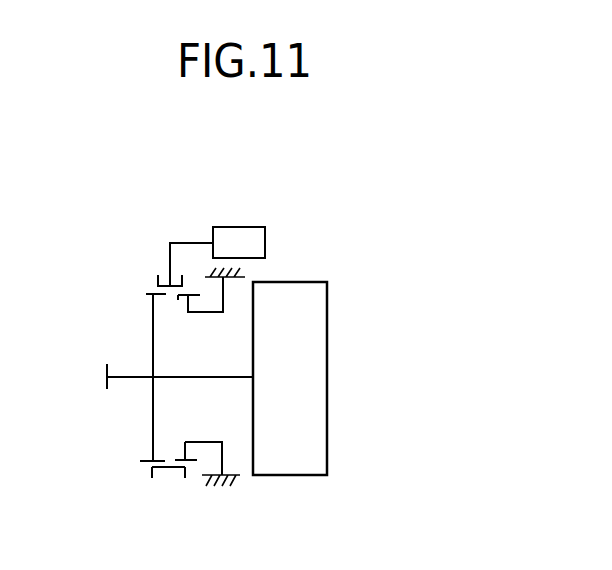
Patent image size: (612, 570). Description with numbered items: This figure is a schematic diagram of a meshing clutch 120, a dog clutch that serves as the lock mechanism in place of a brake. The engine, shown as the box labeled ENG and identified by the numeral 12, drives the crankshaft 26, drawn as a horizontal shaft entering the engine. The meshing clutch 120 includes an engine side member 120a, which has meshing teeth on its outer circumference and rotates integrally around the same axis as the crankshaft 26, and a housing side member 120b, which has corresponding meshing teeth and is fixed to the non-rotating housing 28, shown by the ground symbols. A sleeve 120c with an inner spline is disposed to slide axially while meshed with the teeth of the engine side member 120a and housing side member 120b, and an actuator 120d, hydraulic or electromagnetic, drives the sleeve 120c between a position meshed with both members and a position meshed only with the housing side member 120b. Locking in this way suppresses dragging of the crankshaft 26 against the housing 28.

The meshing clutch 120 is at (203, 166).
The engine side member 120a is at (149, 293).
The housing side member 120b is at (183, 296).
The sleeve 120c is at (157, 281).
The actuator 120d is at (262, 243).
The engine 12 is at (282, 467).
The crankshaft 26 is at (228, 379).
The housing 28 is at (227, 487).